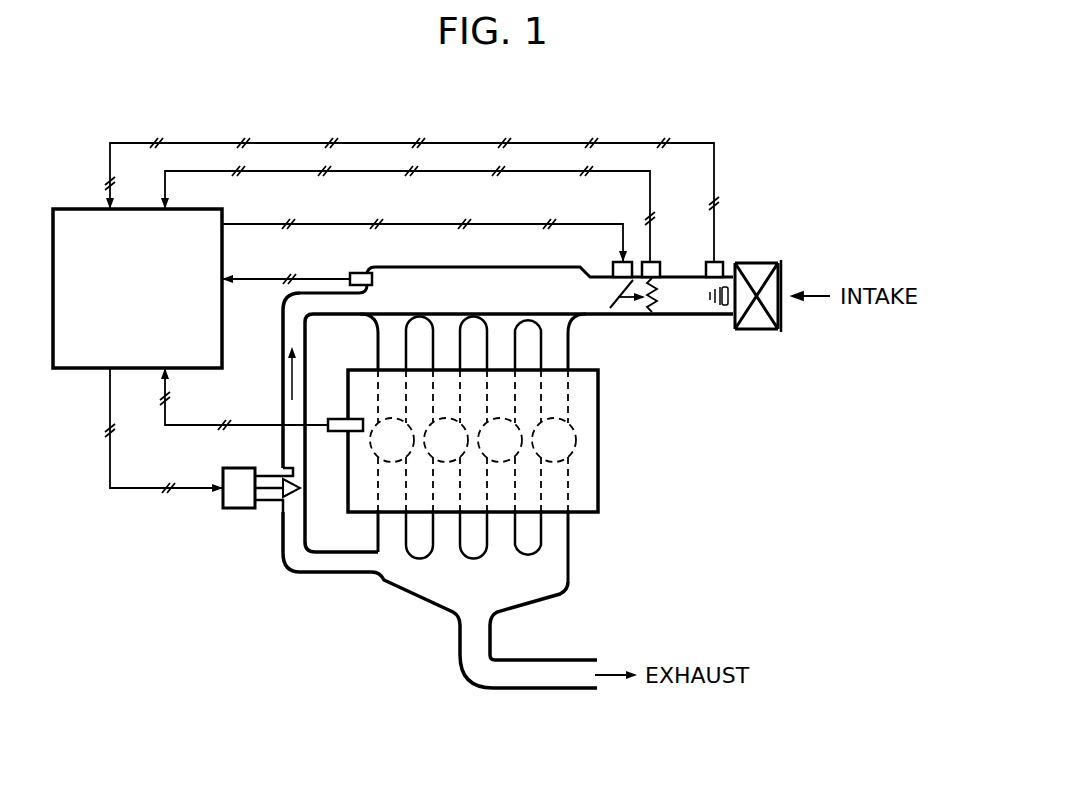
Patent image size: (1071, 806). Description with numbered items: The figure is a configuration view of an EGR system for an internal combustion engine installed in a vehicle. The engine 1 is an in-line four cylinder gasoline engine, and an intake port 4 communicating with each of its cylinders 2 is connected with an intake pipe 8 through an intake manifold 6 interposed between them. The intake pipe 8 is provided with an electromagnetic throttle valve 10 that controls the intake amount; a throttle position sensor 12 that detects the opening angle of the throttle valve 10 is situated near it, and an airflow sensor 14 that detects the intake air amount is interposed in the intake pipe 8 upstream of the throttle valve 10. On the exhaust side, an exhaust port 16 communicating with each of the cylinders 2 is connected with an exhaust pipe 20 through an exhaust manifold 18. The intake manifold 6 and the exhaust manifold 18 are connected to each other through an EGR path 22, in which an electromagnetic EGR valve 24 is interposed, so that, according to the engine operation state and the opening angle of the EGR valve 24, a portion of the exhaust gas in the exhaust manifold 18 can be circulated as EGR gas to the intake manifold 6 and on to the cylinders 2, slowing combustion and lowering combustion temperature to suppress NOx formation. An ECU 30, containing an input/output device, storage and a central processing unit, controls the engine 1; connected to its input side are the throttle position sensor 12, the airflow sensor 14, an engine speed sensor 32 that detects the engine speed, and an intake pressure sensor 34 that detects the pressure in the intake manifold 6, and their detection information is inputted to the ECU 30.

The engine 1 is at (613, 438).
The cylinders 2 is at (560, 455).
The intake port 4 is at (566, 404).
The intake manifold 6 is at (466, 280).
The intake pipe 8 is at (687, 305).
The electromagnetic throttle valve 10 is at (623, 303).
The throttle position sensor 12 is at (655, 262).
The airflow sensor 14 is at (720, 262).
The exhaust port 16 is at (553, 502).
The exhaust manifold 18 is at (427, 588).
The exhaust pipe 20 is at (541, 670).
The EGR path 22 is at (290, 337).
The electromagnetic EGR valve 24 is at (237, 510).
The ECU 30 is at (86, 208).
The engine speed sensor 32 is at (335, 418).
The intake pressure sensor 34 is at (362, 273).